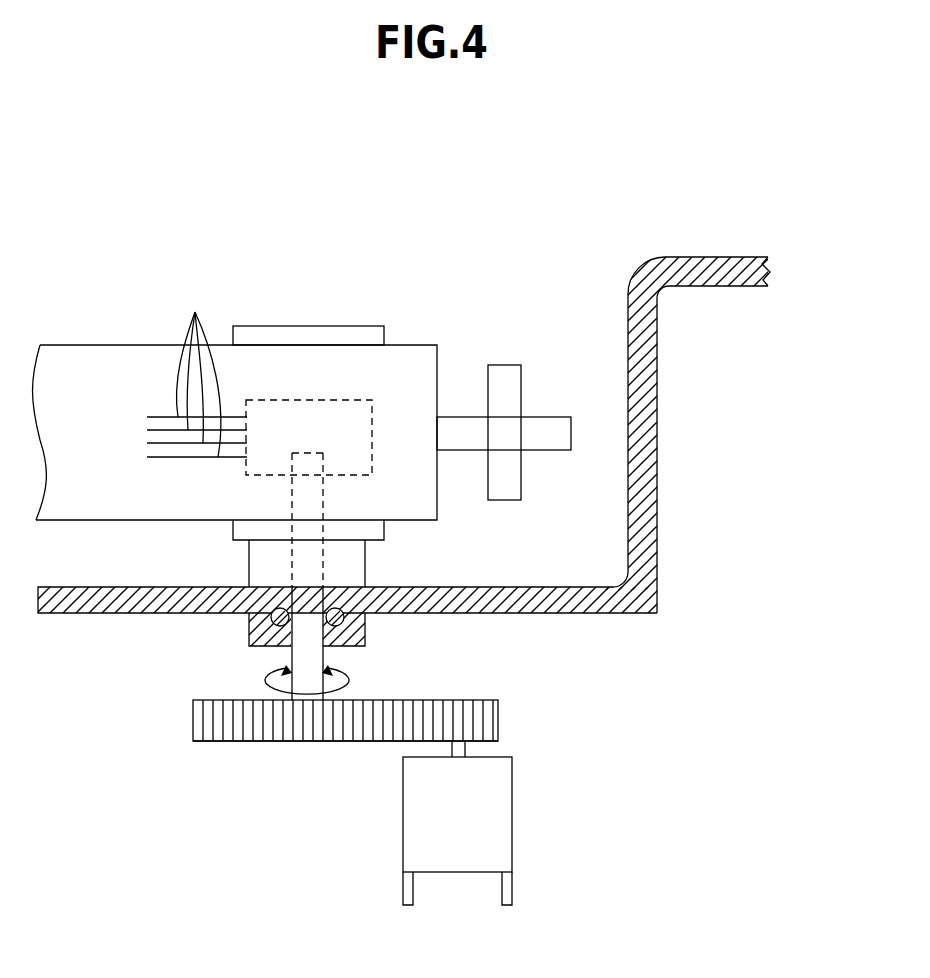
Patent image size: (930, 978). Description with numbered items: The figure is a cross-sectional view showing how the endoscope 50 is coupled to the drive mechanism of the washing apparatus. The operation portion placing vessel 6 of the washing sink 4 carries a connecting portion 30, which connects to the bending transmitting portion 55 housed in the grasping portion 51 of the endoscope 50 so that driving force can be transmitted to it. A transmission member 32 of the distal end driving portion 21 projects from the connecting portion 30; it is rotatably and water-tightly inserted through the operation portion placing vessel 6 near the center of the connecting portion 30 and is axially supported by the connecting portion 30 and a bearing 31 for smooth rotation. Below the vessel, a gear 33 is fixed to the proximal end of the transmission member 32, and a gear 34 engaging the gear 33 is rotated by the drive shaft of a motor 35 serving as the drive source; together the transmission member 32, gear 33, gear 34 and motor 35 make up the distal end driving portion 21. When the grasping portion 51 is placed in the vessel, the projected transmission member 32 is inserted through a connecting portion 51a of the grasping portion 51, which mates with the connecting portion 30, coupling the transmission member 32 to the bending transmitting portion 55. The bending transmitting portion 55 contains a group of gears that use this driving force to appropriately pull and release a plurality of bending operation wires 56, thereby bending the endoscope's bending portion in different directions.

The washing sink 4 is at (712, 254).
The operation portion placing vessel 6 is at (572, 587).
The distal end driving portion 21 is at (489, 679).
The connecting portion 30 is at (270, 556).
The bearing 31 is at (249, 628).
The transmission member 32 is at (305, 657).
The gear 33 is at (258, 742).
The gear 34 is at (500, 716).
The motor 35 is at (468, 812).
The endoscope 50 is at (302, 397).
The grasping portion 51 is at (88, 358).
The connecting portion 51a is at (372, 530).
The bending transmitting portion 55 is at (357, 400).
The bending operation wires 56 is at (197, 371).